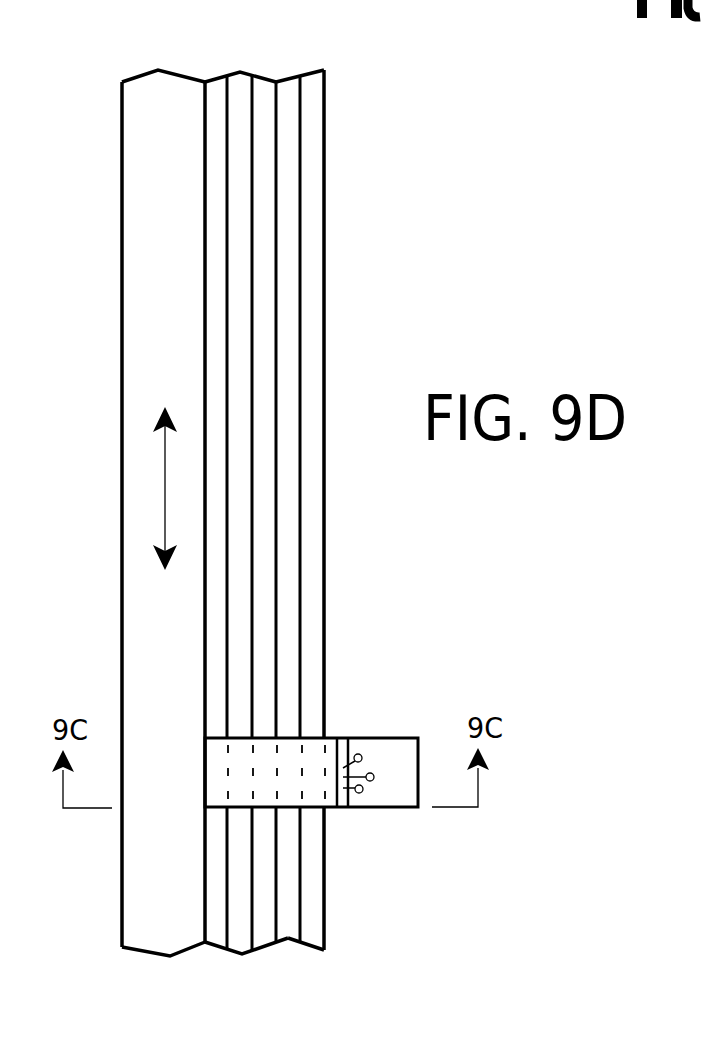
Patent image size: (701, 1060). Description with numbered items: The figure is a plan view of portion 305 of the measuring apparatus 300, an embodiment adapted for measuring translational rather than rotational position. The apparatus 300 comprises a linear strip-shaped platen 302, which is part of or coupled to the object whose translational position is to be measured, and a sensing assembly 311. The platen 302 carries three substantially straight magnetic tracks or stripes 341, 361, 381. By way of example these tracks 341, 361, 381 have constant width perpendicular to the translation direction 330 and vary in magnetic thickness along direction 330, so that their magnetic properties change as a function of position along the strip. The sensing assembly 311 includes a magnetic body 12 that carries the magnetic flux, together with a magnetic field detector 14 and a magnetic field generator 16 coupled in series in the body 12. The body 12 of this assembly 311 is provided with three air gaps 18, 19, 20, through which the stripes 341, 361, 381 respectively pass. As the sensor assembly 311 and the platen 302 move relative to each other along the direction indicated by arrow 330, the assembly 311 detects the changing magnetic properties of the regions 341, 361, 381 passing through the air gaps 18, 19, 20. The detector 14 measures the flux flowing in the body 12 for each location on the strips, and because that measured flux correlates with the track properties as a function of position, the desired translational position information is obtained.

The apparatus 300 is at (349, 720).
The portion 305 is at (303, 478).
The strip-shaped platen 302 is at (142, 88).
The magnetic track 341 is at (218, 83).
The magnetic track 361 is at (263, 82).
The magnetic track 381 is at (313, 83).
The translation direction 330 is at (165, 487).
The sensing assembly 311 is at (388, 838).
The magnetic body 12 is at (318, 761).
The magnetic field detector 14 is at (341, 740).
The magnetic field generator 16 is at (408, 808).
The air gap 18 is at (218, 750).
The air gap 19 is at (265, 772).
The air gap 20 is at (312, 795).